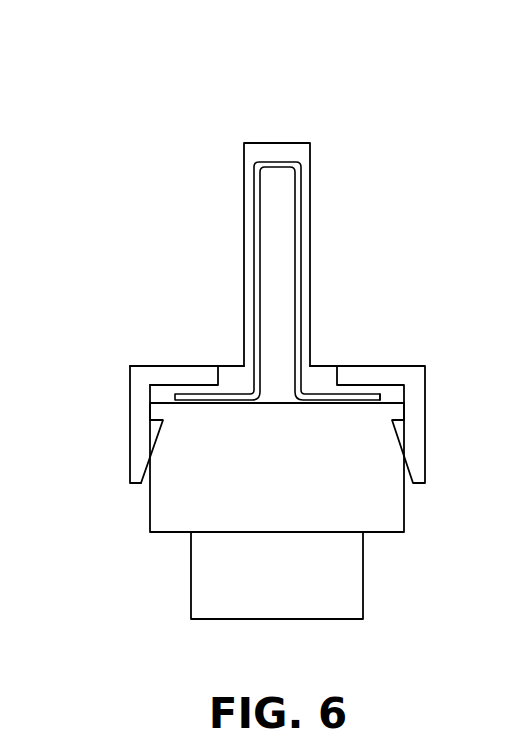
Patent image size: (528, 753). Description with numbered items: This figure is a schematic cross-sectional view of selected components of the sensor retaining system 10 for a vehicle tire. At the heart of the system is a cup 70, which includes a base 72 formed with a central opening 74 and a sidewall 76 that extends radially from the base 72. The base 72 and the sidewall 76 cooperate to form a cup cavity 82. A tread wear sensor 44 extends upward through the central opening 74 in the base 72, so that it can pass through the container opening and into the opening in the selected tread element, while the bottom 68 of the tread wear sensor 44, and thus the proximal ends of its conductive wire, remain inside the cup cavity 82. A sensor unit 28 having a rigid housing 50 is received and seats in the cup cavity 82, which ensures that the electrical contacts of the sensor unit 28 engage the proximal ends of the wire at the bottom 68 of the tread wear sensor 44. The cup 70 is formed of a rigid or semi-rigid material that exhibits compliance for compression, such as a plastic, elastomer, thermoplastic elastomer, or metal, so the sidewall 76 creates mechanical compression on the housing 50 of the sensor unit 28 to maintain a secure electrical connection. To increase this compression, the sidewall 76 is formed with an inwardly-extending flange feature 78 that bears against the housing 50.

The sensor retaining system 10 is at (388, 157).
The tread wear sensor 44 is at (243, 143).
The central opening 74 is at (334, 379).
The cup 70 is at (428, 393).
The sidewall 76 is at (140, 393).
The base 72 is at (180, 375).
The flange feature 78 is at (158, 433).
The cup cavity 82 is at (152, 407).
The housing 50 is at (151, 520).
The bottom 68 is at (392, 392).
The sensor unit 28 is at (188, 620).